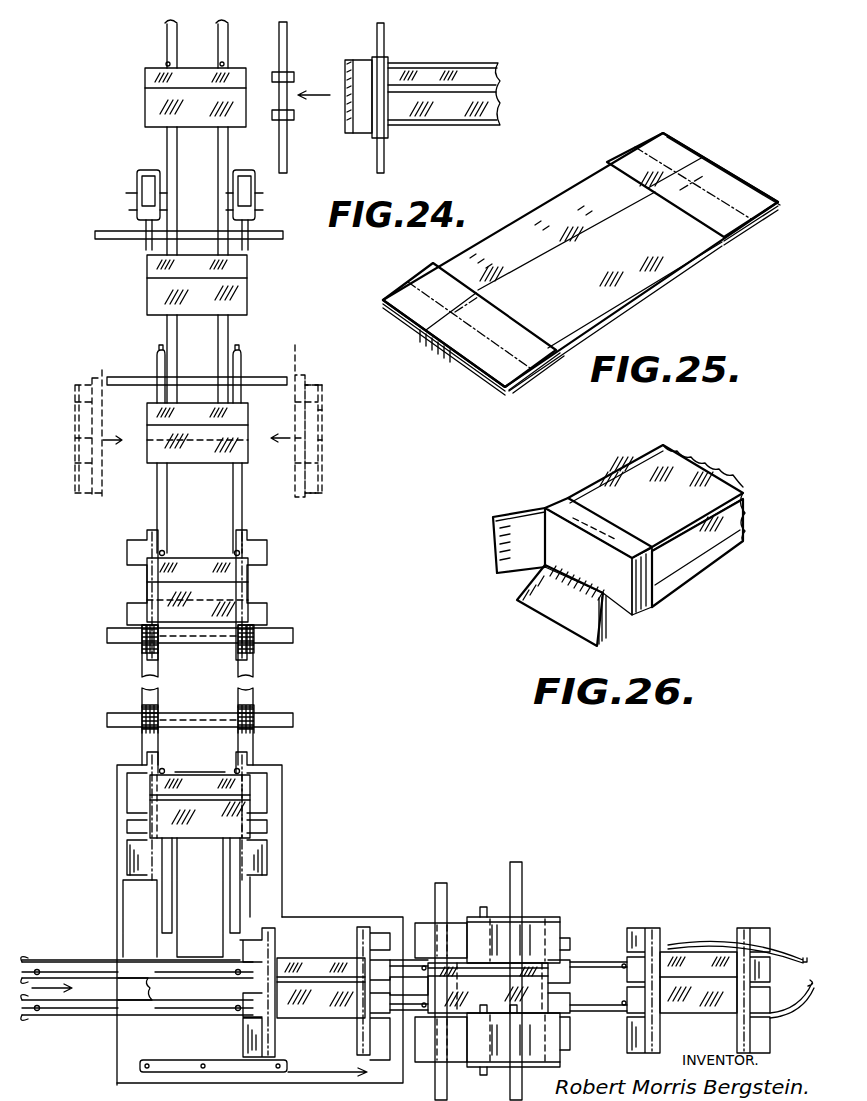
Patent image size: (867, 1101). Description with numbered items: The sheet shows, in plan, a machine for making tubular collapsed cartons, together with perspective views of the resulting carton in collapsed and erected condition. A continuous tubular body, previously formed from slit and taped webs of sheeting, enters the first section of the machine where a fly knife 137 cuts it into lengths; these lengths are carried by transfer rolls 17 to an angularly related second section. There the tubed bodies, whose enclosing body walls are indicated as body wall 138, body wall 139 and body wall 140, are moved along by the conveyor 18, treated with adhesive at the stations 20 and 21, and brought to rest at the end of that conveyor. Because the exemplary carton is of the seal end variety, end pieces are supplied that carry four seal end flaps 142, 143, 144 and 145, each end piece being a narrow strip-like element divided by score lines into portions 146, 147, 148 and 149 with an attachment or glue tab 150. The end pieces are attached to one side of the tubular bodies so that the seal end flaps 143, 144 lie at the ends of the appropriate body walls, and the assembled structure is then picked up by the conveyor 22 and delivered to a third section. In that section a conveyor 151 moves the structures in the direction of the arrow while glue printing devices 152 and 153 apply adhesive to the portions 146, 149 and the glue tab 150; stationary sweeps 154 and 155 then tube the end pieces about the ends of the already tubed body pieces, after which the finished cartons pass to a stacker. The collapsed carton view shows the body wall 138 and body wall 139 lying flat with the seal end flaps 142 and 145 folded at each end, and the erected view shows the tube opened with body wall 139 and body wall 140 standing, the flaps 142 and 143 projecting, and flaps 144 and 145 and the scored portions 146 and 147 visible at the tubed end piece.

In FIG. 24, the transfer rolls 17 is at (302, 130).
In FIG. 24, the conveyor 18 is at (216, 150).
In FIG. 24, the adhesive treatment station 20 is at (137, 173).
In FIG. 24, the adhesive treatment station 21 is at (255, 185).
In FIG. 24, the conveyor 22 is at (220, 509).
In FIG. 24, the fly knife 137 is at (355, 133).
In FIG. 25, the enclosing body wall 138 is at (535, 227).
In FIG. 25, the enclosing body wall 139 is at (580, 262).
In FIG. 26, the enclosing body wall 139 is at (655, 498).
In FIG. 26, the enclosing body wall 140 is at (740, 512).
In FIG. 24, the seal end flap 142 is at (323, 390).
In FIG. 25, the seal end flap 142 is at (581, 264).
In FIG. 26, the seal end flap 142 is at (493, 555).
In FIG. 24, the seal end flap 143 is at (323, 416).
In FIG. 26, the seal end flap 143 is at (542, 615).
In FIG. 24, the seal end flap 144 is at (323, 446).
In FIG. 26, the seal end flap 144 is at (630, 615).
In FIG. 24, the seal end flap 145 is at (323, 486).
In FIG. 25, the seal end flap 145 is at (579, 257).
In FIG. 26, the seal end flap 145 is at (548, 533).
In FIG. 24, the strip portion 146 is at (295, 482).
In FIG. 26, the strip portion 146 is at (617, 528).
In FIG. 24, the strip portion 147 is at (294, 455).
In FIG. 26, the strip portion 147 is at (650, 604).
In FIG. 24, the strip portion 148 is at (294, 416).
In FIG. 24, the strip portion 149 is at (294, 396).
In FIG. 24, the glue tab 150 is at (295, 355).
In FIG. 24, the conveyor 151 is at (152, 990).
In FIG. 24, the glue printing device 152 is at (450, 923).
In FIG. 24, the glue printing device 153 is at (457, 1062).
In FIG. 24, the stationary sweep 154 is at (668, 945).
In FIG. 24, the stationary sweep 155 is at (715, 1030).